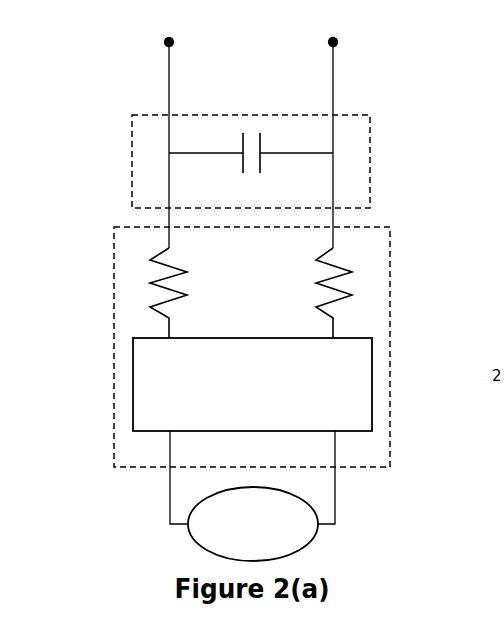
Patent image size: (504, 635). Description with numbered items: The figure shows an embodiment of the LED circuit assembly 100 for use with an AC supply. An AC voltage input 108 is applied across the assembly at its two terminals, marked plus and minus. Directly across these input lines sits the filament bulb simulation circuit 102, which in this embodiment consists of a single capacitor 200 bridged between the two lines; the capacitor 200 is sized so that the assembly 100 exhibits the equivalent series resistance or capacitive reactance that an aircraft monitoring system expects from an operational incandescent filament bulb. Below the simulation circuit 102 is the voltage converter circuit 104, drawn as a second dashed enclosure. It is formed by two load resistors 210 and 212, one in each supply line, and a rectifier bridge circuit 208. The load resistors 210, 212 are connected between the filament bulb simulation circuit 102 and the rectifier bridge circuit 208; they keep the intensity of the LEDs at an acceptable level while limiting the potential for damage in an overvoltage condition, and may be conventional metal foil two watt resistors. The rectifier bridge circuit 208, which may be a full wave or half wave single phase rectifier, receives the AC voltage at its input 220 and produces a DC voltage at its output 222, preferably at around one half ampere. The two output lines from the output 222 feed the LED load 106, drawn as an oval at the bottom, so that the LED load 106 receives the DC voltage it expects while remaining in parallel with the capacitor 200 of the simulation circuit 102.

The LED circuit assembly 100 is at (388, 78).
The filament bulb simulation circuit 102 is at (370, 172).
The voltage converter circuit 104 is at (390, 412).
The LED load 106 is at (252, 496).
The voltage input 108 is at (251, 93).
The capacitor 200 is at (247, 173).
The rectifier bridge circuit 208 is at (252, 384).
The load resistor 210 is at (132, 284).
The load resistor 212 is at (352, 283).
The input of rectifier bridge circuit 220 is at (238, 338).
The output of rectifier bridge circuit 222 is at (263, 431).